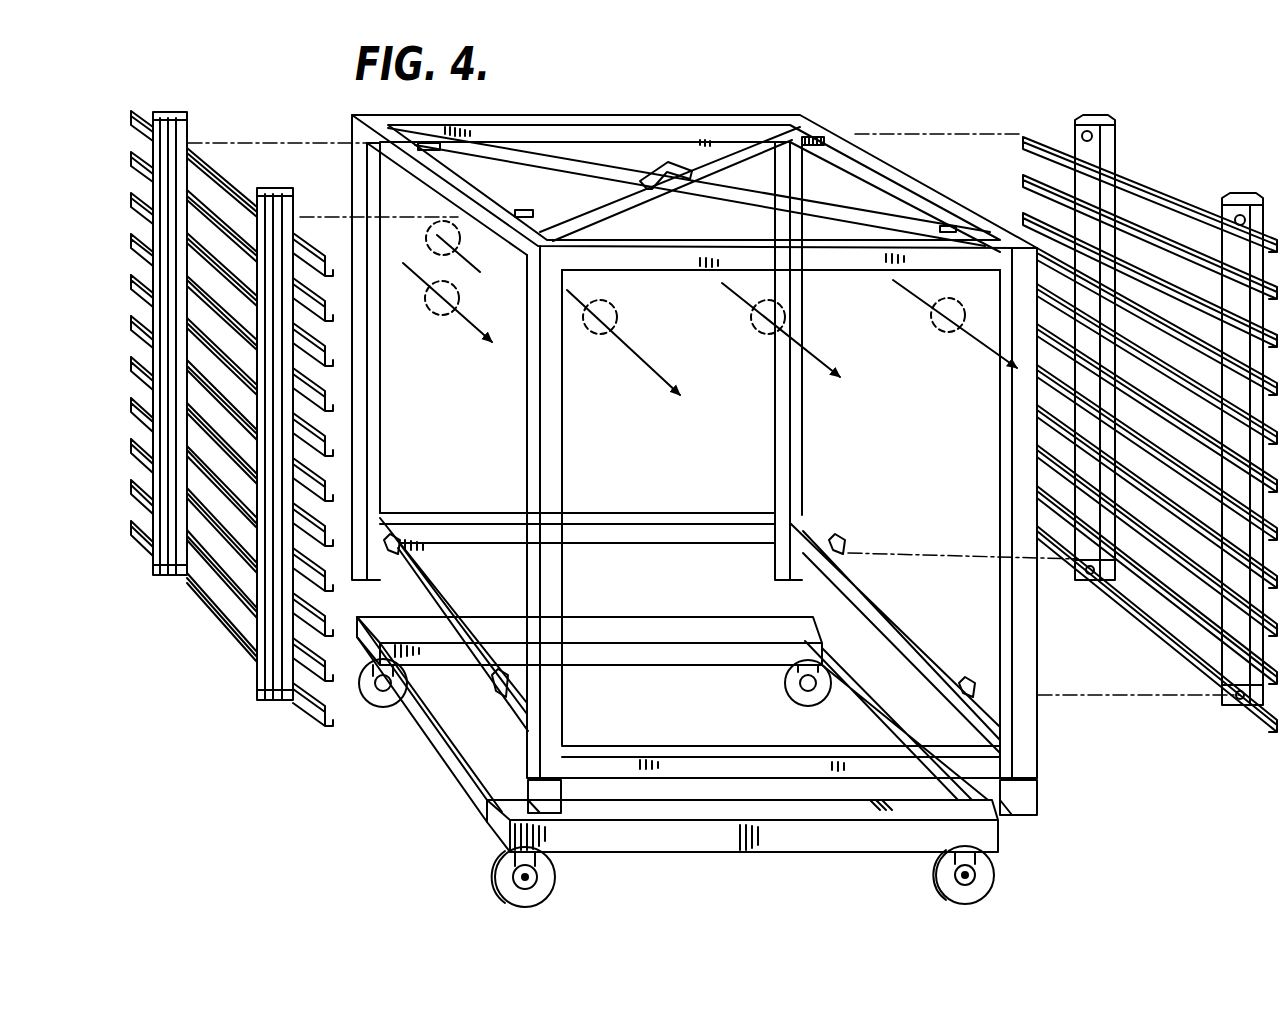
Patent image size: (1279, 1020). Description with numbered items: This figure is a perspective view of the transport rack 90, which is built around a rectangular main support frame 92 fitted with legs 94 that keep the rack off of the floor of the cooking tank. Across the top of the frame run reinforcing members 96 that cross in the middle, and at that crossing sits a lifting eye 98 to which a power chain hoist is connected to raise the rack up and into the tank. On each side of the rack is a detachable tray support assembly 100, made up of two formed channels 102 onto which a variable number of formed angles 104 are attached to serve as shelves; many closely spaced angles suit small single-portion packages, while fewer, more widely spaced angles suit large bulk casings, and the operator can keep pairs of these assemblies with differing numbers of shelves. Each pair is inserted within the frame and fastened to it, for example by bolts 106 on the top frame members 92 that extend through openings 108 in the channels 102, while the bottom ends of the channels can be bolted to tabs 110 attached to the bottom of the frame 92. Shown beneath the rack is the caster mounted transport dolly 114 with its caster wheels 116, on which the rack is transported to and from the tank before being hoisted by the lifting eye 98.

The transport rack 90 is at (763, 106).
The main support frame 92 is at (1033, 640).
The legs 94 is at (1030, 800).
The reinforcing members 96 is at (525, 158).
The lifting eye 98 is at (658, 170).
The detachable tray support assemblies 100 is at (204, 153).
The formed channels 102 is at (262, 190).
The formed angles 104 is at (222, 168).
The bolts 106 is at (813, 138).
The openings 108 is at (1085, 118).
The tabs 110 is at (838, 546).
The caster mounted transport dolly 114 is at (1000, 838).
The caster wheels 116 is at (930, 877).